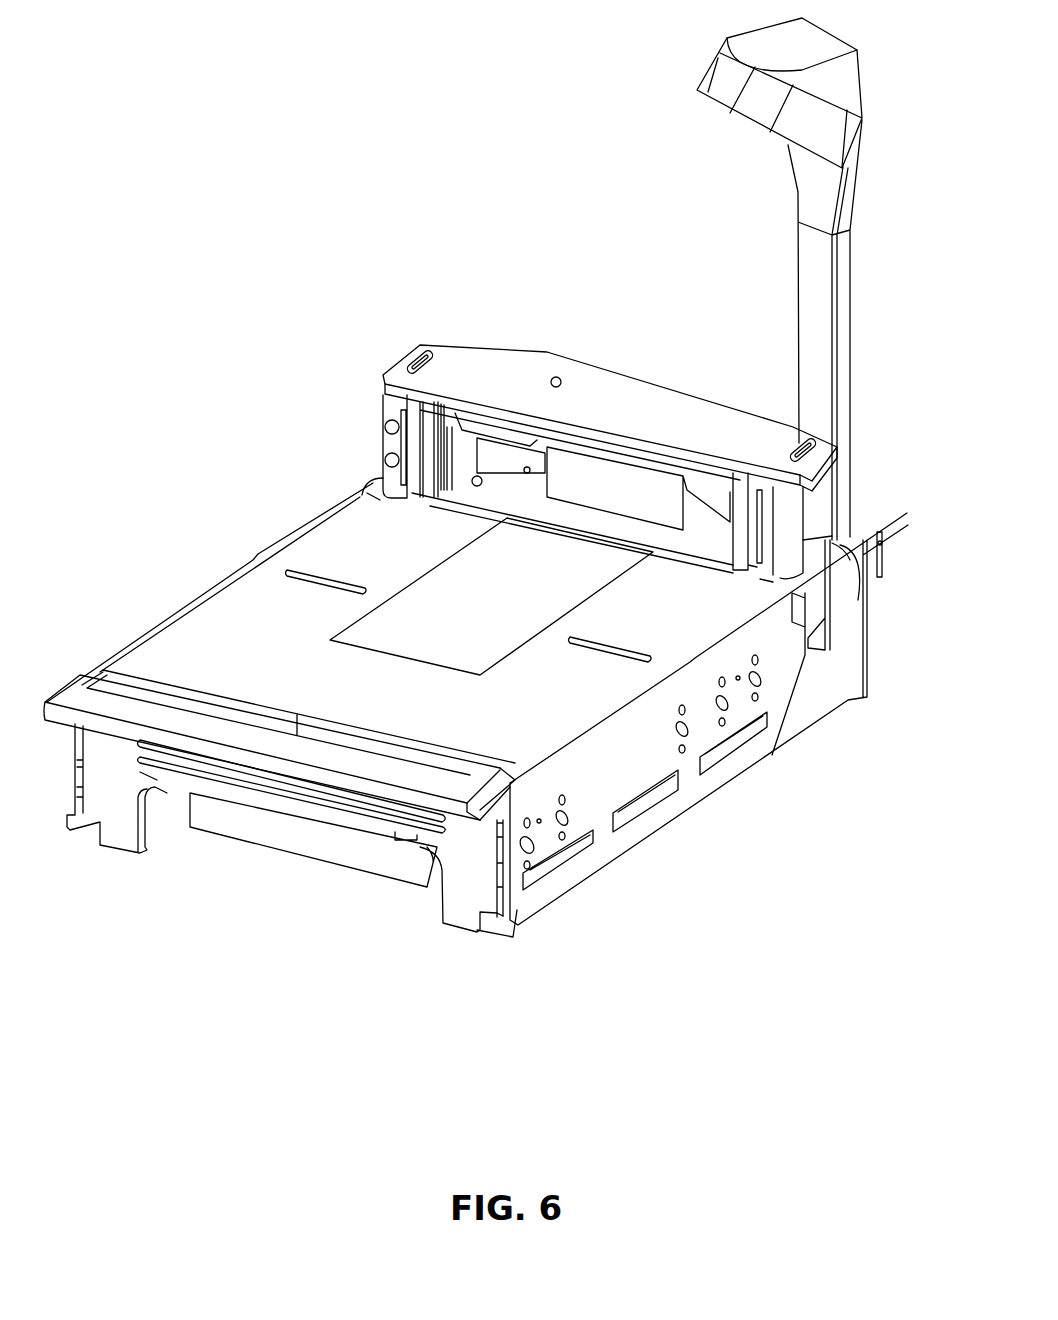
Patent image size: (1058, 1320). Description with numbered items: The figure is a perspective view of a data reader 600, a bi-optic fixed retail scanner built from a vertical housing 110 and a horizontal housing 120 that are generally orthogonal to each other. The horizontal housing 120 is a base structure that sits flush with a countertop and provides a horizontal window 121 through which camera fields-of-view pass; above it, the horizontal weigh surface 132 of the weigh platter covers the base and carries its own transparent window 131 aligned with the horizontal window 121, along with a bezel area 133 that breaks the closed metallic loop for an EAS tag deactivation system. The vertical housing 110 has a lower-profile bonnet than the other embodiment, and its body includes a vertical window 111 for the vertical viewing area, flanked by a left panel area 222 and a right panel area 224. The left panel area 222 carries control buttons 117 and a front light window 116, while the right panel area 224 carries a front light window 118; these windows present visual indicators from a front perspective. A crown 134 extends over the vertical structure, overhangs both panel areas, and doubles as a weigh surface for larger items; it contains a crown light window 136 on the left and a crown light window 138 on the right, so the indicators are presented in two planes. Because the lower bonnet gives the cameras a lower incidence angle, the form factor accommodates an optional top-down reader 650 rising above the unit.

The data reader 600 is at (383, 215).
The top-down reader 650 is at (865, 97).
The vertical housing 110 is at (618, 338).
The vertical window 111 is at (507, 473).
The front light window 116 is at (420, 493).
The control buttons 117 is at (385, 430).
The front light window 118 is at (745, 560).
The horizontal housing 120 is at (228, 560).
The horizontal window 121 is at (457, 608).
The window 131 is at (467, 650).
The horizontal weigh surface 132 is at (175, 656).
The bezel area 133 is at (593, 573).
The crown 134 is at (660, 395).
The crown light window 136 is at (408, 360).
The crown light window 138 is at (833, 446).
The left panel area 222 is at (383, 400).
The right panel area 224 is at (858, 580).